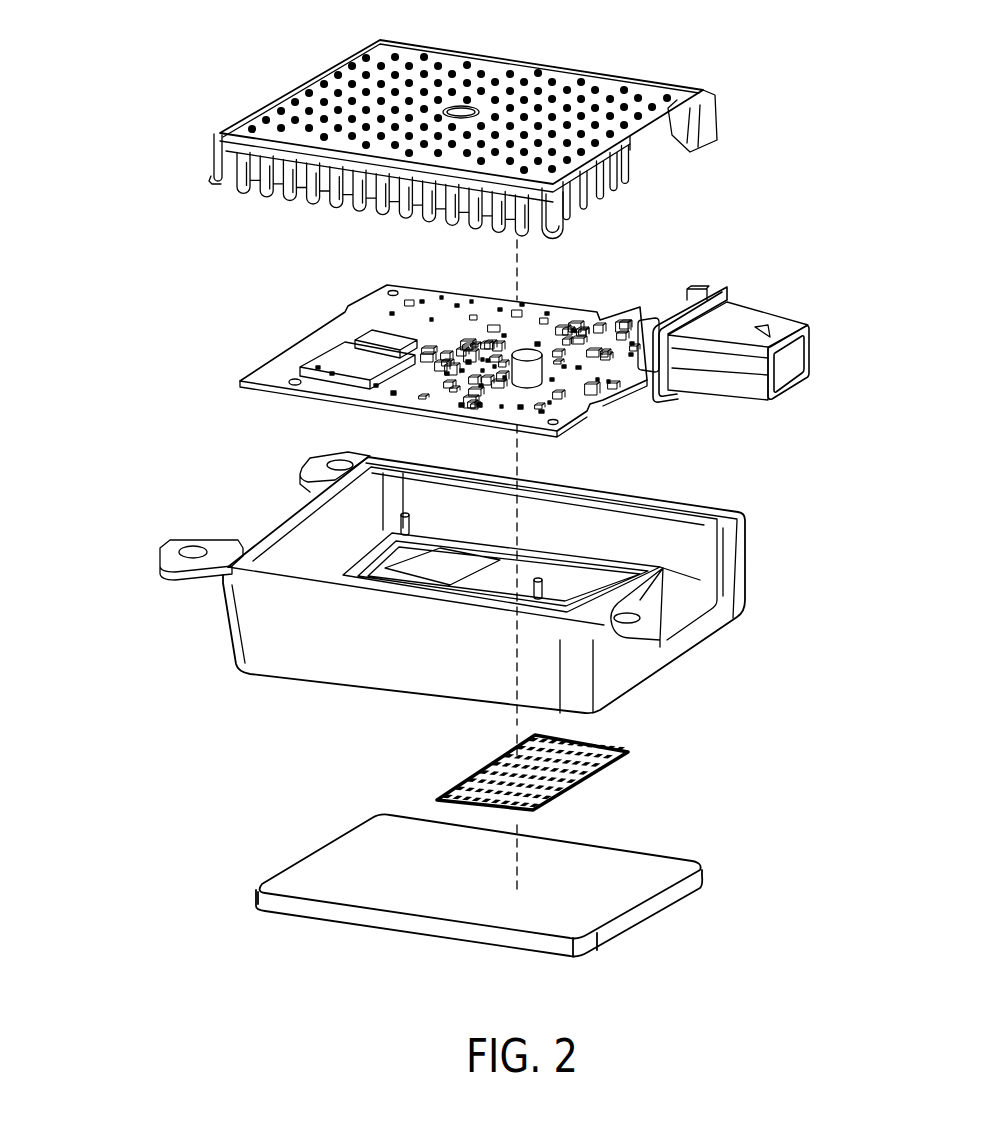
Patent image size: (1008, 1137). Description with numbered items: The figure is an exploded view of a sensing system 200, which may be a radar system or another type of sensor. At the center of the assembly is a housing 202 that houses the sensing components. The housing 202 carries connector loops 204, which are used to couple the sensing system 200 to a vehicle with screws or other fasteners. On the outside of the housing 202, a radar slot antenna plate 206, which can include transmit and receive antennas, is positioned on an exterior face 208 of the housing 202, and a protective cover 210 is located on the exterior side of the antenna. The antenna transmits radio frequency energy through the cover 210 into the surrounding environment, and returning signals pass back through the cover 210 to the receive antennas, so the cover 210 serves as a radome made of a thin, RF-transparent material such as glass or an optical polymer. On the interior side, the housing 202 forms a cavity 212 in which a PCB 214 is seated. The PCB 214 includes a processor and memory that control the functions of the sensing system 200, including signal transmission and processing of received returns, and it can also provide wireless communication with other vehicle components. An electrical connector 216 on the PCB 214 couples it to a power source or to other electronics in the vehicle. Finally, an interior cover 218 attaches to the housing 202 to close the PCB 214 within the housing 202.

The sensing system 200 is at (111, 90).
The housing 202 is at (732, 600).
The connector loops 204 is at (308, 465).
The radar slot antenna plate 206 is at (590, 776).
The exterior face 208 is at (370, 663).
The protective cover 210 is at (632, 893).
The cavity 212 is at (635, 517).
The PCB 214 is at (283, 347).
The electrical connector 216 is at (795, 353).
The interior cover 218 is at (703, 113).